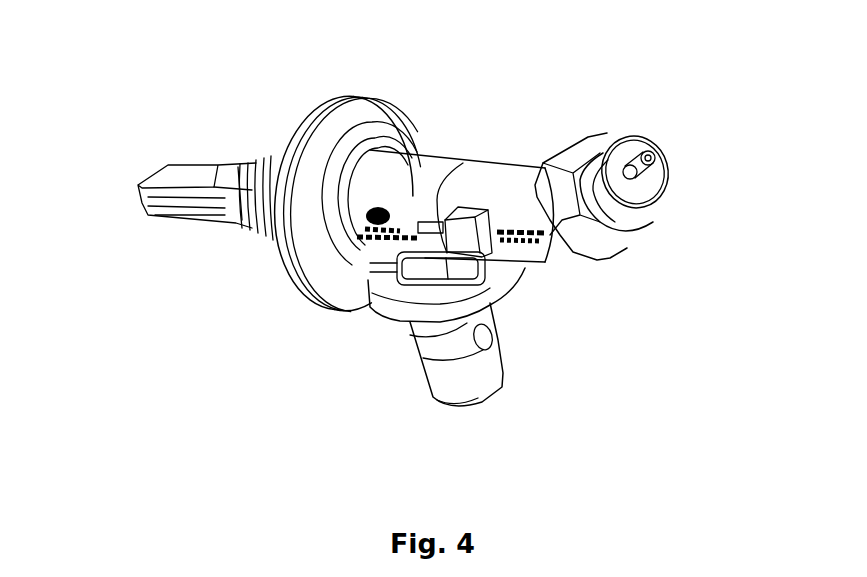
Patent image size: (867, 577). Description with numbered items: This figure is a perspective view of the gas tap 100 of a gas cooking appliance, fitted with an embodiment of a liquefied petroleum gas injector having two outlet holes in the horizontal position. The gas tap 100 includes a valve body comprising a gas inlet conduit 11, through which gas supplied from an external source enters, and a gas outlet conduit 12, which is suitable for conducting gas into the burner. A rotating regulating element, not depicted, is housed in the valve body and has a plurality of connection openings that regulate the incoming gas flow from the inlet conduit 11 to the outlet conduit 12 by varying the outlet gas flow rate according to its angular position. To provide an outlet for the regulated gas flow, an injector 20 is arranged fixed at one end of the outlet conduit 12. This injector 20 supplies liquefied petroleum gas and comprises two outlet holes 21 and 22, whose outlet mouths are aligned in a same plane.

The gas tap 100 is at (161, 101).
The gas outlet conduit 12 is at (508, 190).
The gas inlet conduit 11 is at (455, 385).
The injector 20 is at (627, 232).
The outlet hole 21 is at (642, 174).
The outlet hole 22 is at (653, 158).